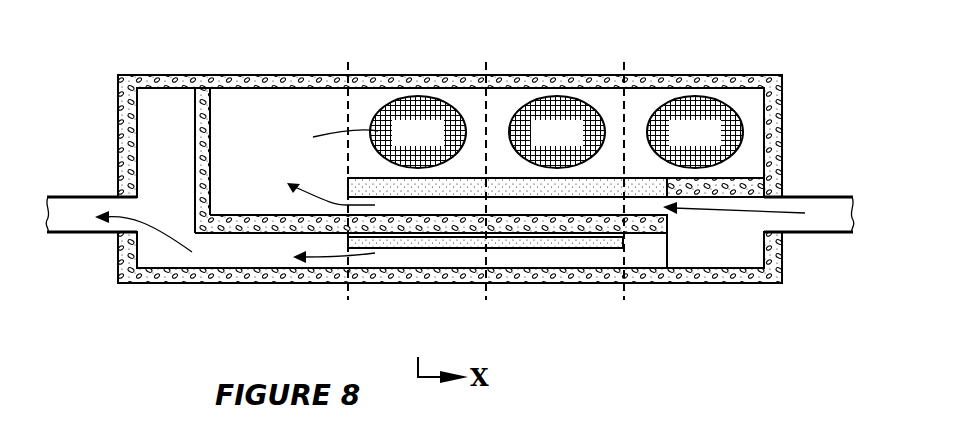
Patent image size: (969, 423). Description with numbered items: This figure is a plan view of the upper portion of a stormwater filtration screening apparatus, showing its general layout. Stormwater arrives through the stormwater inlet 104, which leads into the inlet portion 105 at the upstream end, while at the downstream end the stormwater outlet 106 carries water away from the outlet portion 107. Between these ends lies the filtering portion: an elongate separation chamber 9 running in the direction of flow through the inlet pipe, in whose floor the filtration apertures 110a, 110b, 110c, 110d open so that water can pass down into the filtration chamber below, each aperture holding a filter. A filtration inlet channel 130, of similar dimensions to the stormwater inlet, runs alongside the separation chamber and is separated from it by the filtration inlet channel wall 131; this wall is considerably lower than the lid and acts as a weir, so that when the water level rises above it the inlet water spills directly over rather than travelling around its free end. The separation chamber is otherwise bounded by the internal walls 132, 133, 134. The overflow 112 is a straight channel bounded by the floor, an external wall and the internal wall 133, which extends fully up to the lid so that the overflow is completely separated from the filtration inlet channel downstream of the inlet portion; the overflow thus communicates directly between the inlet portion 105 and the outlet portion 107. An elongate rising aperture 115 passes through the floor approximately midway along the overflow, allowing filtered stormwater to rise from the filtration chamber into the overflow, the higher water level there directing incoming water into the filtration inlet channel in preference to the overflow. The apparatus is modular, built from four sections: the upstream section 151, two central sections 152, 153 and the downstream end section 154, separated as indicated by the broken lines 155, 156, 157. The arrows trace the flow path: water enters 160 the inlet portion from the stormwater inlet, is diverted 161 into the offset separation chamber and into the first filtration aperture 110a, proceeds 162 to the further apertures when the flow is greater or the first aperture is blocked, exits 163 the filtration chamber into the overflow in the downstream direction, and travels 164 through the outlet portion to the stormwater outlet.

The exhaust gas treatment device 9 is at (477, 108).
The stormwater inlet 104 is at (822, 215).
The inlet portion 105 is at (698, 244).
The stormwater outlet 106 is at (75, 208).
The outlet portion 107 is at (150, 161).
The filtration aperture 110a is at (378, 131).
The filtration aperture 110b is at (395, 143).
The filtration aperture 110c is at (534, 143).
The filtration aperture 110d is at (672, 143).
The overflow 112 is at (612, 249).
The rising aperture 115 is at (433, 249).
The filtration inlet channel 130 is at (540, 200).
The filtration inlet channel wall 131 is at (637, 185).
The internal wall 132 is at (195, 130).
The internal wall 133 is at (240, 233).
The internal wall 134 is at (742, 178).
The upstream section 151 is at (737, 75).
The central section 152 is at (545, 75).
The central section 153 is at (398, 75).
The downstream end section 154 is at (263, 75).
The broken line 155 is at (348, 288).
The broken line 156 is at (486, 300).
The broken line 157 is at (627, 300).
The flow arrow 160 is at (745, 213).
The flow arrow 161 is at (320, 202).
The flow arrow 162 is at (363, 128).
The flow arrow 163 is at (380, 252).
The flow arrow 164 is at (150, 218).